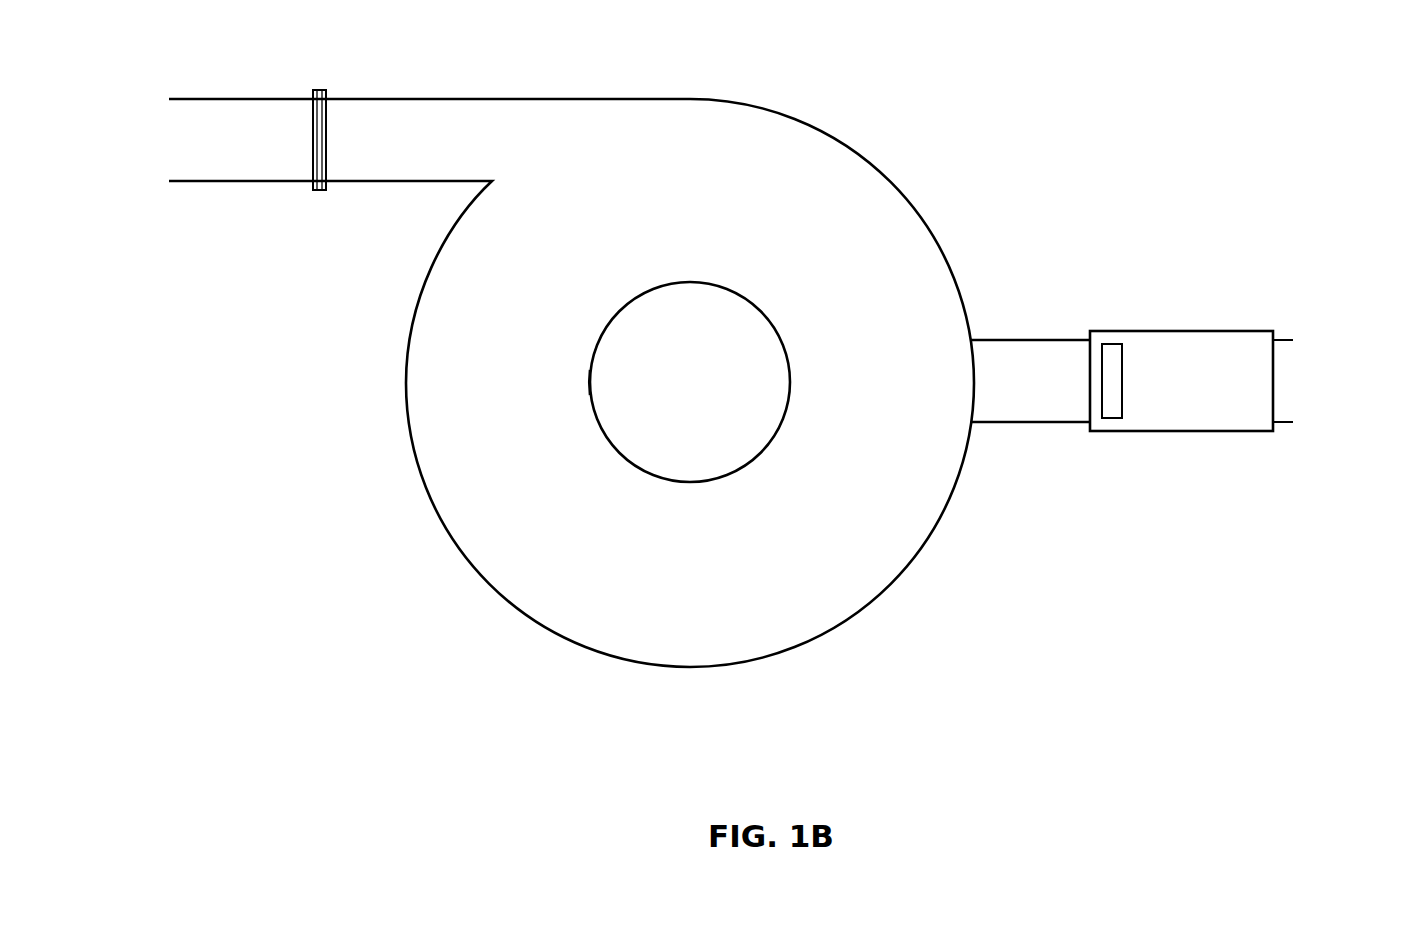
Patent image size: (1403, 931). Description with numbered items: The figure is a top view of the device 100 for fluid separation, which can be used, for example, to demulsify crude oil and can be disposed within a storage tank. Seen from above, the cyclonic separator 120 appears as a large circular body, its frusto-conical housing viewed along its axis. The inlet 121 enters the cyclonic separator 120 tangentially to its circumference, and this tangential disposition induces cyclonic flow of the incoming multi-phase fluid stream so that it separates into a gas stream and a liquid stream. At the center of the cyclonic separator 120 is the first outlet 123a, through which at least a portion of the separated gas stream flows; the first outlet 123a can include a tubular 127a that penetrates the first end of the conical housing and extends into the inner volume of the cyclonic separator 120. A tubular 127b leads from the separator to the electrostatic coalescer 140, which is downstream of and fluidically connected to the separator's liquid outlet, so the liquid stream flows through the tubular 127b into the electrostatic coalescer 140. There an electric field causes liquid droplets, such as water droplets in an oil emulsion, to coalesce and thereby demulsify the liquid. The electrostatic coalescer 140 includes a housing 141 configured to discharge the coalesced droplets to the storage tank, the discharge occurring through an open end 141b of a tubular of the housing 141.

The device 100 is at (359, 699).
The cyclonic separator 120 is at (874, 138).
The inlet 121 is at (413, 99).
The first outlet 123a is at (690, 382).
The tubular 127a is at (590, 390).
The tubular 127b is at (1000, 340).
The electrostatic coalescer 140 is at (1240, 312).
The housing 141 is at (1273, 331).
The open end 141b is at (1303, 378).